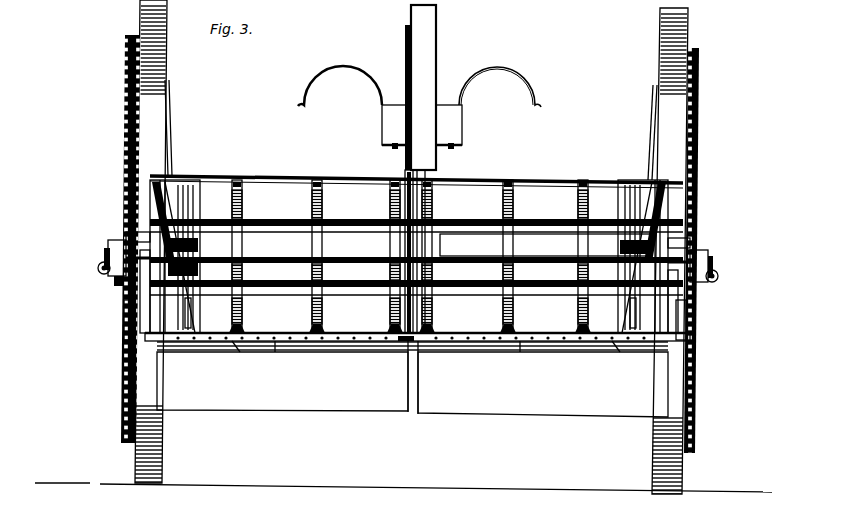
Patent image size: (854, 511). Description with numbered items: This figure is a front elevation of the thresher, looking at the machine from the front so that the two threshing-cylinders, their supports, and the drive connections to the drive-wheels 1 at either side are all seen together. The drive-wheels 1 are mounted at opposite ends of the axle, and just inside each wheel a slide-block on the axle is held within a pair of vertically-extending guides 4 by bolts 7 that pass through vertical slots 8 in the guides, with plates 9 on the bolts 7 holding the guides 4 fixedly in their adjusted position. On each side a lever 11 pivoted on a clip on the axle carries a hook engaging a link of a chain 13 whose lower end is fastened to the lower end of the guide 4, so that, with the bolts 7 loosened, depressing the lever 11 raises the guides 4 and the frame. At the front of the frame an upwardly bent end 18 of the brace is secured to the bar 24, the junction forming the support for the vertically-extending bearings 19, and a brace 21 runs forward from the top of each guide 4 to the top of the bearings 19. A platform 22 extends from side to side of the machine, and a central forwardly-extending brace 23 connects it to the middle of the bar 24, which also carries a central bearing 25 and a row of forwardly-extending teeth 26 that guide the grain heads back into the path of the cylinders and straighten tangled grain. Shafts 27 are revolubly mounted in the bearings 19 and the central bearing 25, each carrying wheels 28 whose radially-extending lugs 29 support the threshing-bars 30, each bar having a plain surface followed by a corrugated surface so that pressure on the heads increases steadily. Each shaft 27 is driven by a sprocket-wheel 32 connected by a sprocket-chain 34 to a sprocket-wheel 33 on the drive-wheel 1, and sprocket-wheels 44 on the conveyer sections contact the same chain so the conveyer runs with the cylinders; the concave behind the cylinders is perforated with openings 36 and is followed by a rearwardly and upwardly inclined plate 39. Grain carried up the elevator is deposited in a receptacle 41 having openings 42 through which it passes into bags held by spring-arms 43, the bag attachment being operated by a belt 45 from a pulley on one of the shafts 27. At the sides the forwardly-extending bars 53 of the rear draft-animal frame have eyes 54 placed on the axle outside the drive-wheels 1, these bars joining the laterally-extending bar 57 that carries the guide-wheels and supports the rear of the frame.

The drive-wheels 1 is at (160, 127).
The vertically-extending guides 4 is at (193, 195).
The bolts 7 is at (192, 246).
The vertical slots 8 is at (191, 305).
The plates 9 is at (192, 268).
The lever 11 is at (218, 176).
The chain 13 is at (231, 343).
The upwardly bent front end 18 is at (158, 366).
The vertically-extending bearings 19 is at (140, 300).
The brace 21 is at (148, 230).
The platform 22 is at (460, 380).
The forwardly-extending brace 23 is at (408, 380).
The bar 24 is at (408, 344).
The central bearing 25 is at (433, 306).
The forwardly-extending teeth 26 is at (276, 346).
The shafts 27 is at (347, 258).
The wheels 28 is at (243, 195).
The radially-extending lugs 29 is at (321, 176).
The threshing-bars 30 is at (345, 216).
The sprocket-wheel 32 is at (120, 250).
The sprocket-wheel on drive-wheel 33 is at (130, 131).
The sprocket-chain 34 is at (126, 398).
The openings 36 is at (416, 296).
The plate 39 is at (545, 245).
The receptacle 41 is at (462, 128).
The openings 42 is at (394, 148).
The spring-arms 43 is at (355, 72).
The sprocket-wheels 44 is at (145, 340).
The belt 45 is at (410, 78).
The forwardly-extending bars 53 is at (98, 269).
The eye 54 is at (108, 262).
The laterally-extending bar 57 is at (117, 282).